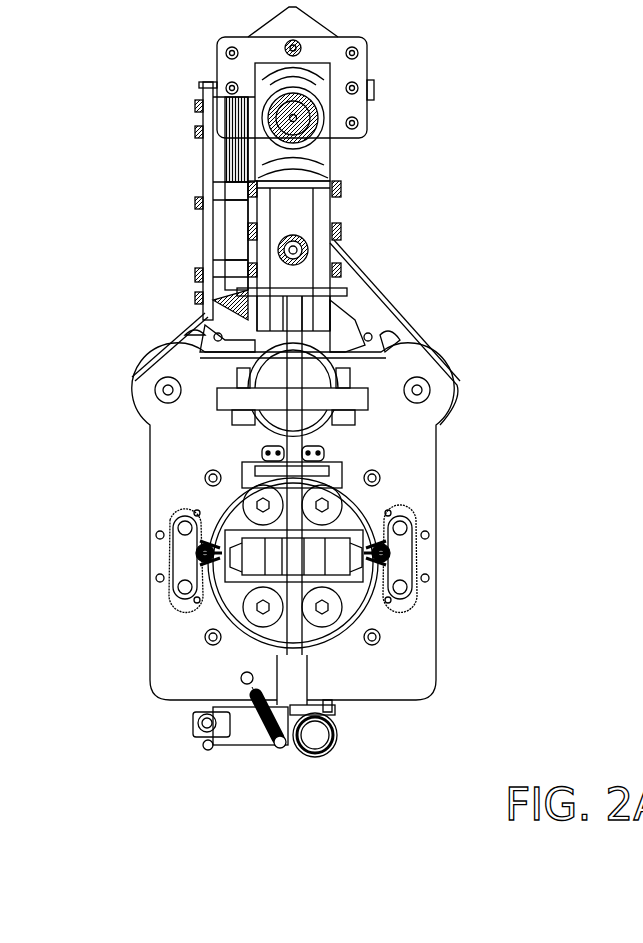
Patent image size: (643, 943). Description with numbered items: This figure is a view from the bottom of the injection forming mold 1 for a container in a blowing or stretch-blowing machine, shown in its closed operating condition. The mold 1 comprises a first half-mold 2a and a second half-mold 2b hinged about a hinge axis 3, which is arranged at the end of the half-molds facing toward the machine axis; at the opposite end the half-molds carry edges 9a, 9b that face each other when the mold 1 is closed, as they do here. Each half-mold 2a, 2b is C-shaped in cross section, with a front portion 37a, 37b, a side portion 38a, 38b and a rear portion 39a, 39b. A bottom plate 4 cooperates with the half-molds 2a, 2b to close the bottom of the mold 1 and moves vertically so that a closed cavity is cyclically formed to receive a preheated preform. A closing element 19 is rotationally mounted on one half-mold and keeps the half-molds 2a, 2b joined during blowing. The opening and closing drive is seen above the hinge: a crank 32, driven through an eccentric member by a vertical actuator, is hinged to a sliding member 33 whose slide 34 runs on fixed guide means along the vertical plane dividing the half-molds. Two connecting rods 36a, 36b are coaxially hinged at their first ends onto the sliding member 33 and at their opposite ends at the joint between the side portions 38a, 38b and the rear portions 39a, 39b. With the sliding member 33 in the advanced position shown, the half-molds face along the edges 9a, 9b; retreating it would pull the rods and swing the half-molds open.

The injection forming mold 1 is at (495, 112).
The first half-mold 2a is at (452, 620).
The second half-mold 2b is at (135, 660).
The hinge axis 3 is at (345, 371).
The bottom plate 4 is at (390, 510).
The edge 9a is at (283, 690).
The edge 9b is at (307, 758).
The closing element 19 is at (225, 745).
The crank 32 is at (313, 145).
The sliding member 33 is at (302, 211).
The slide 34 is at (228, 232).
The connecting rod 36a is at (358, 297).
The connecting rod 36b is at (187, 333).
The front portion 37a is at (387, 703).
The front portion 37b is at (182, 703).
The side portion 38a is at (436, 550).
The side portion 38b is at (148, 558).
The rear portion 39a is at (355, 330).
The rear portion 39b is at (187, 312).